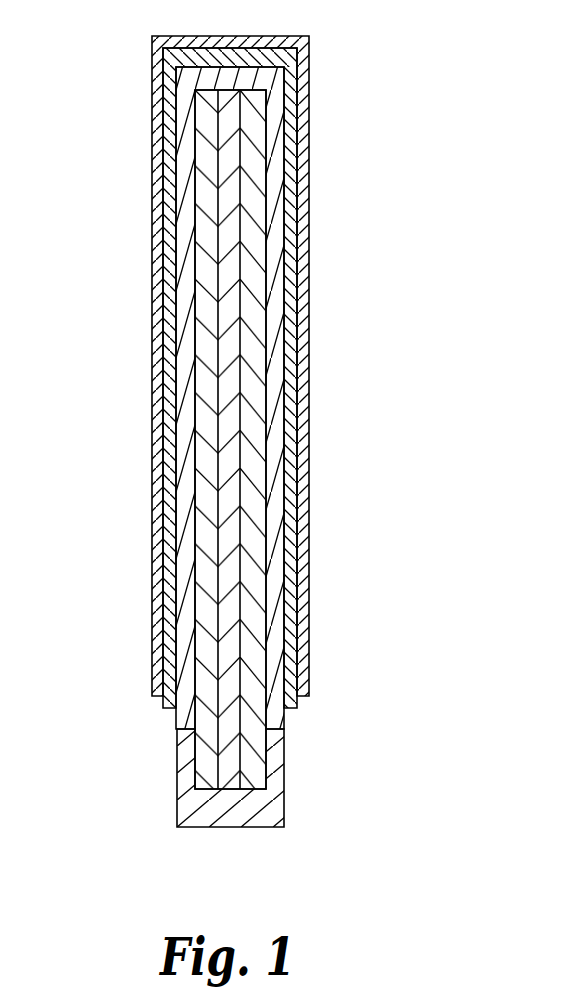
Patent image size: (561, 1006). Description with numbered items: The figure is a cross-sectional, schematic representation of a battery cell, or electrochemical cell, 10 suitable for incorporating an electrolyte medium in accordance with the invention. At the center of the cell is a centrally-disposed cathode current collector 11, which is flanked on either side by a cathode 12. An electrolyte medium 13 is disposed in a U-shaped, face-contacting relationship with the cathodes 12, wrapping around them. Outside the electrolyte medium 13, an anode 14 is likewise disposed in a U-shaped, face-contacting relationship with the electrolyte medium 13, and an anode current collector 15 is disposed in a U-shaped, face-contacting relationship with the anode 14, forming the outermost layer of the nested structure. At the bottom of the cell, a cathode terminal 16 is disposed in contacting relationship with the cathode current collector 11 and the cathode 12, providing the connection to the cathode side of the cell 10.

The battery cell 10 is at (276, 434).
The cathode current collector 11 is at (228, 113).
The cathode 12 is at (234, 439).
The electrolyte medium 13 is at (277, 287).
The anode 14 is at (288, 353).
The anode current collector 15 is at (153, 465).
The cathode terminal 16 is at (268, 802).